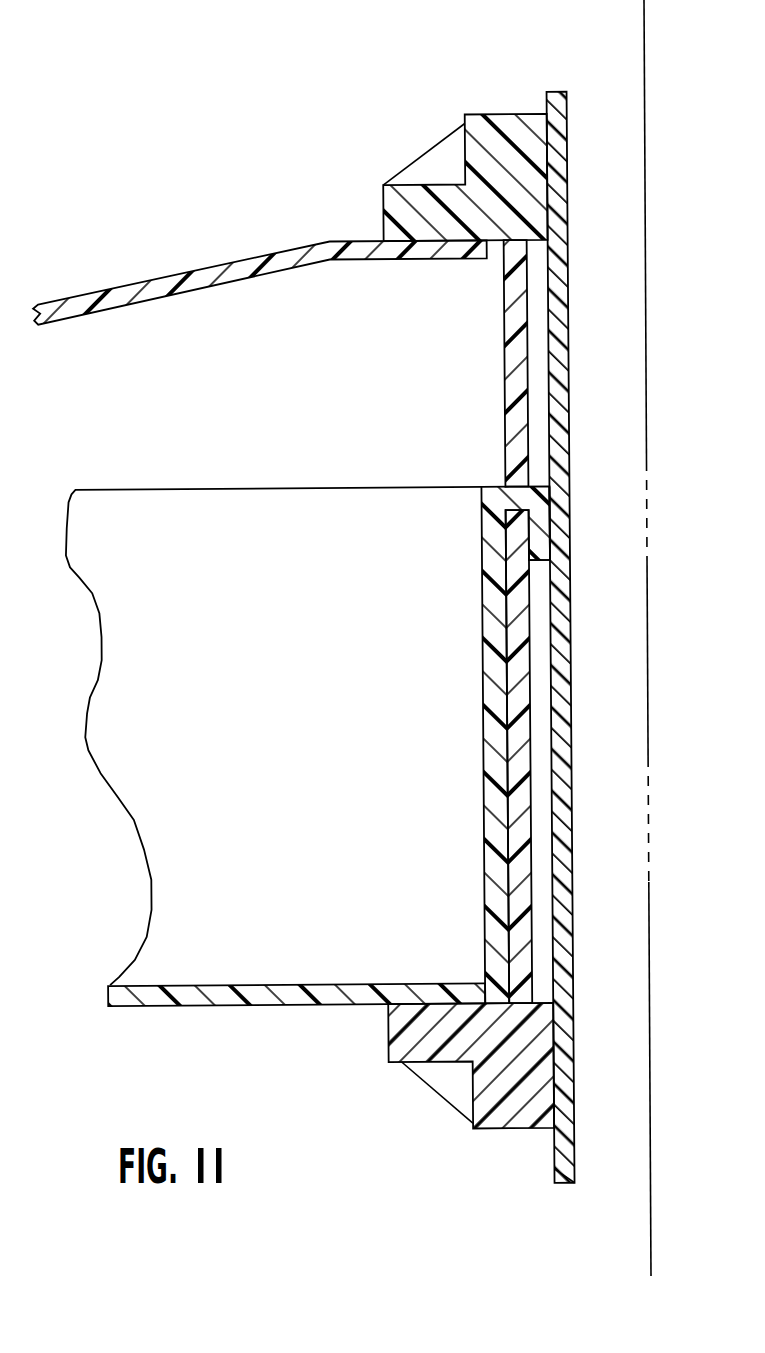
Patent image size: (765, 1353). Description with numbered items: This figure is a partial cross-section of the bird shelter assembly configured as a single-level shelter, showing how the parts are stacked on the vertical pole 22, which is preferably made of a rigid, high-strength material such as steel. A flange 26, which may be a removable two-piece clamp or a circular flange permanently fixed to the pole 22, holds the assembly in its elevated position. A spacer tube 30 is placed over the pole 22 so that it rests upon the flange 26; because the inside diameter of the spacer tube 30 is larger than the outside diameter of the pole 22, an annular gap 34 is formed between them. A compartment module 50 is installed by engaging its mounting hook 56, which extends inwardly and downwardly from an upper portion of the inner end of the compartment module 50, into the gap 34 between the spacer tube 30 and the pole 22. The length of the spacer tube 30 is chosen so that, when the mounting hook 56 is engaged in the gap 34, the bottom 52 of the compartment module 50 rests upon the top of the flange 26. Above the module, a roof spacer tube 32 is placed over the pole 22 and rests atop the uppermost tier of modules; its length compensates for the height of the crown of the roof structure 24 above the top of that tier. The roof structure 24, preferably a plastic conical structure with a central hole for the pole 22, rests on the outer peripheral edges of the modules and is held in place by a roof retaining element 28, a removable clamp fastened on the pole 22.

The vertical pole 22 is at (553, 1172).
The roof structure 24 is at (206, 260).
The flange 26 is at (477, 1126).
The roof retaining element 28 is at (383, 188).
The spacer tube 30 is at (530, 728).
The roof spacer tube 32 is at (503, 347).
The annular gap 34 is at (538, 585).
The compartment module 50 is at (197, 478).
The bottom 52 is at (210, 1006).
The mounting hook 56 is at (552, 520).